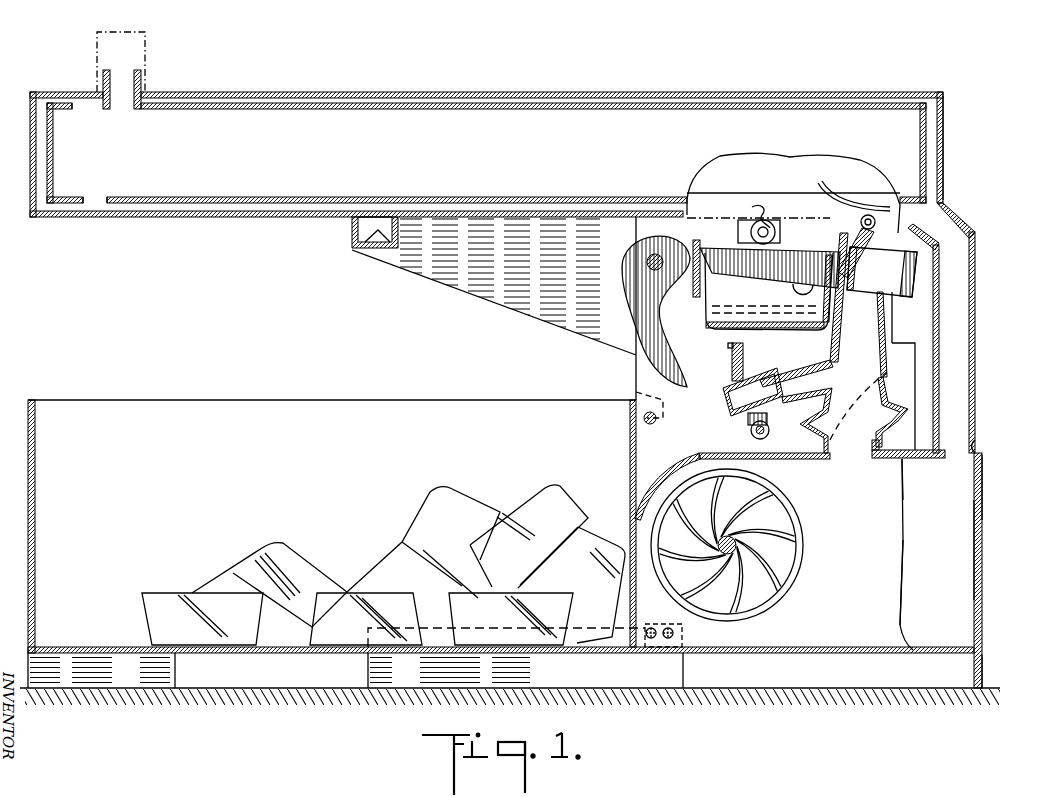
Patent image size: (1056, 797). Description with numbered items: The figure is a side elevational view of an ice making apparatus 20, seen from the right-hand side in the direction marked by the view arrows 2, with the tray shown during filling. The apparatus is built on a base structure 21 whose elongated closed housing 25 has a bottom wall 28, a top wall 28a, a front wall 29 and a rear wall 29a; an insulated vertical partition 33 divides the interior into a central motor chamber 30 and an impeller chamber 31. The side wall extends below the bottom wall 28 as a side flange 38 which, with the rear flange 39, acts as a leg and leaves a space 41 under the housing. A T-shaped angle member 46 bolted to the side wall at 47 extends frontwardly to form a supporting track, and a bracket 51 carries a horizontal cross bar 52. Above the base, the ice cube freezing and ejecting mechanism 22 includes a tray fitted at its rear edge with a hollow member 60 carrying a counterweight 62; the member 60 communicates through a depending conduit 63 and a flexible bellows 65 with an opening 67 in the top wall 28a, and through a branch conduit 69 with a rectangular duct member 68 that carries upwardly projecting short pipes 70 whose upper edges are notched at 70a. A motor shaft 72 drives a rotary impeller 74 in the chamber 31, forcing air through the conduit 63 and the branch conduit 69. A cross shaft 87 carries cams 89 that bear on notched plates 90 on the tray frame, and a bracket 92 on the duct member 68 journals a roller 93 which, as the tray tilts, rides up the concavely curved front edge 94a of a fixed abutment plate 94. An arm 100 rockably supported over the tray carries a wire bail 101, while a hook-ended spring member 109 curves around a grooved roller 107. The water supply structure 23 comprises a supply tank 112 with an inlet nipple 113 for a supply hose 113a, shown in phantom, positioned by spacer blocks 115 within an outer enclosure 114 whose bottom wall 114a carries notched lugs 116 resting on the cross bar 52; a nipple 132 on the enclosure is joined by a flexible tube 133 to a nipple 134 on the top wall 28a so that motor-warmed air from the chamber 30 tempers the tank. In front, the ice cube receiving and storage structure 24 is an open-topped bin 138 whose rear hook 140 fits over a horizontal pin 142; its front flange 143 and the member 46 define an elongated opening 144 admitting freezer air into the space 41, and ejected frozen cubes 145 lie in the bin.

The section line 2- 2 is at (612, 52).
The ice making apparatus 20 is at (331, 283).
The base structure 21 is at (984, 616).
The ice cube freezing and ejecting mechanism 22 is at (983, 275).
The water supply structure 23 is at (446, 83).
The ice cube receiving and storage structure 24 is at (289, 396).
The housing 25 is at (983, 454).
The bottom wall 28 is at (847, 647).
The top wall 28a is at (797, 459).
The front wall 29 is at (643, 583).
The rear wall 29a is at (973, 547).
The compartment 30 is at (951, 607).
The compartment 31 is at (878, 540).
The partition 33 is at (910, 650).
The side flange 38 is at (870, 676).
The rear flange 39 is at (983, 666).
The space 41 is at (781, 678).
The T-shaped angle member 46 is at (623, 675).
The bolts 47 is at (670, 630).
The bracket 51 is at (445, 277).
The horizontal cross bar 52 is at (378, 246).
The hollow member 60 is at (893, 270).
The counterweight 62 is at (912, 295).
The conduit 63 is at (894, 338).
The bellows 65 is at (907, 420).
The opening 67 is at (833, 458).
The hollow member 68 is at (724, 405).
The branch conduit 69 is at (787, 374).
The short pipes 70 is at (731, 366).
The notched upper edges 70a is at (729, 346).
The output shaft 72 is at (738, 541).
The rotary impeller 74 is at (790, 542).
The rotary cross shaft 87 is at (650, 259).
The cam 89 is at (626, 291).
The rigid plate 90 is at (700, 295).
The bracket 92 is at (770, 418).
The roller 93 is at (751, 433).
The abutment plate 94 is at (905, 387).
The curved front edge 94a is at (868, 410).
The flat arm 100 is at (840, 203).
The bail 101 is at (838, 228).
The grooved roller 107 is at (776, 234).
The wire spring member 109 is at (762, 222).
The water supply tank 112 is at (53, 160).
The inlet nipple 113 is at (141, 86).
The supply hose 113a is at (110, 52).
The outer enclosure 114 is at (30, 164).
The bottom wall 114a is at (231, 217).
The spacer blocks 115 is at (95, 205).
The notched lugs 116 is at (398, 242).
The nipple 132 is at (921, 237).
The flexible tube 133 is at (976, 303).
The nipple 134 is at (977, 427).
The bin 138 is at (36, 503).
The hook 140 is at (640, 392).
The horizontal pin 142 is at (651, 423).
The flange 143 is at (95, 683).
The elongated opening 144 is at (187, 678).
The frozen cubes 145 is at (294, 563).